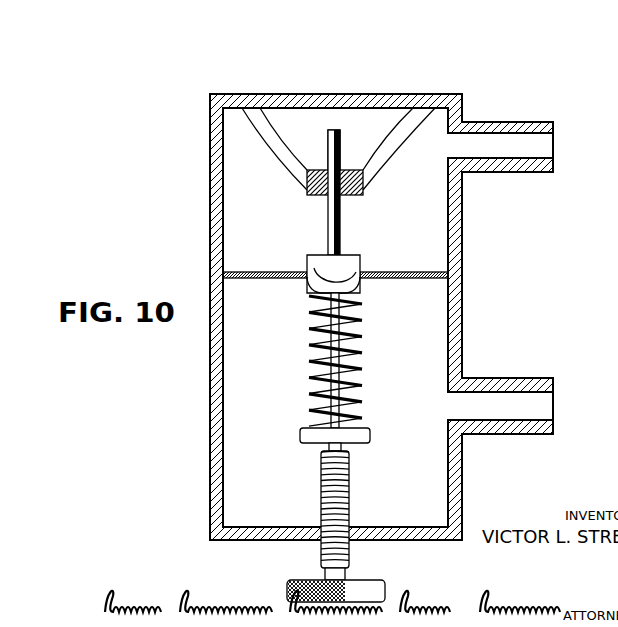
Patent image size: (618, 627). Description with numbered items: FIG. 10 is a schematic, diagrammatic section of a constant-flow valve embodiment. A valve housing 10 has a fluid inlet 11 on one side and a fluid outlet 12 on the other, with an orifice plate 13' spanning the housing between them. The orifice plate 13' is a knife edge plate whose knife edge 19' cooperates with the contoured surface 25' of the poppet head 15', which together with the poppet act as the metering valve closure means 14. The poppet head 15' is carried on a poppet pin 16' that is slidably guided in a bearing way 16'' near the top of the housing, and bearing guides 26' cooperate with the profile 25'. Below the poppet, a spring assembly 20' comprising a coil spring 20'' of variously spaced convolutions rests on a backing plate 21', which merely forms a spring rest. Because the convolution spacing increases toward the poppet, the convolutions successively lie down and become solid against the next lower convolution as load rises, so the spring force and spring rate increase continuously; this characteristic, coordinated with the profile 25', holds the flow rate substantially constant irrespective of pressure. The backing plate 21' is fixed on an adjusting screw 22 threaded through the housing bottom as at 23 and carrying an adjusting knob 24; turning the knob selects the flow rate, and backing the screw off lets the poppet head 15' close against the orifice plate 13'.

The valve housing 10 is at (210, 221).
The fluid inlet 11 is at (538, 150).
The fluid outlet 12 is at (538, 407).
The orifice plate 13' is at (335, 302).
The poppet or metering pin valve closure means 14 is at (320, 246).
The poppet head 15' is at (348, 258).
The poppet pin 16' is at (338, 149).
The bearing way 16'' is at (328, 163).
The knife edge 19' is at (389, 261).
The spring assembly 20' is at (337, 362).
The coil spring 20'' is at (310, 342).
The backing plate 21' is at (350, 459).
The adjusting screw 22 is at (350, 510).
The threaded housing portion 23 is at (318, 533).
The adjusting knob 24 is at (287, 592).
The contoured surface 25' is at (356, 308).
The bearing guides 26' is at (307, 300).